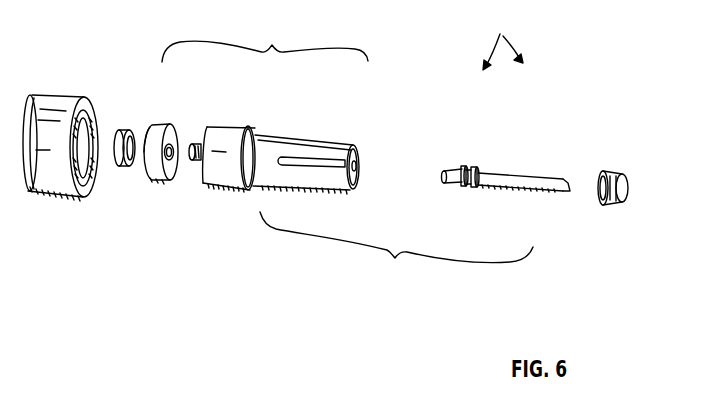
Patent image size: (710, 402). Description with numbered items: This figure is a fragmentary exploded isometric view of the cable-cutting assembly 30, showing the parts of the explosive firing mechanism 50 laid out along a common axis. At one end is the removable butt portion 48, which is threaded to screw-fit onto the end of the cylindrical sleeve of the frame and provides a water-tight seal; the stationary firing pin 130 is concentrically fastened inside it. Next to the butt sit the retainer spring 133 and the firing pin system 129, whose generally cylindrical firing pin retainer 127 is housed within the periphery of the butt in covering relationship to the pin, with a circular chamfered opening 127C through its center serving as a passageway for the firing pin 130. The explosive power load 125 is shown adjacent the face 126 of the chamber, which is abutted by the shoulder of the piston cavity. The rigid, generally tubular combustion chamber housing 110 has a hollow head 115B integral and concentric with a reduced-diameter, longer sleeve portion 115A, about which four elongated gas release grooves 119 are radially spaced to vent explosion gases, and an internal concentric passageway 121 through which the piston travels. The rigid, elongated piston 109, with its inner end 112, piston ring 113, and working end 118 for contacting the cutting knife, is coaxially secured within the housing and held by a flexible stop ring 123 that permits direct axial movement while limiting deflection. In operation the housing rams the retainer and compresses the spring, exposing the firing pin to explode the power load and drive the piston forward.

The butt portion 48 is at (60, 100).
The firing pin 130 is at (86, 155).
The retainer spring 133 is at (120, 167).
The firing pin system 129 is at (153, 110).
The firing pin retainer 127 is at (163, 118).
The chamfered opening 127C is at (173, 150).
The face of chamber 126 is at (203, 182).
The explosive power load 125 is at (192, 155).
The head 115B is at (238, 127).
The sleeve portion 115A is at (313, 147).
The gas release grooves 119 is at (333, 165).
The passageway 121 is at (357, 165).
The firing mechanism 50 is at (265, 39).
The assembly 30 is at (497, 43).
The combustion chamber housing 110 is at (396, 257).
The inner end 112 is at (440, 176).
The piston ring 113 is at (473, 187).
The piston 109 is at (513, 174).
The working end 118 is at (567, 190).
The stop ring 123 is at (617, 177).